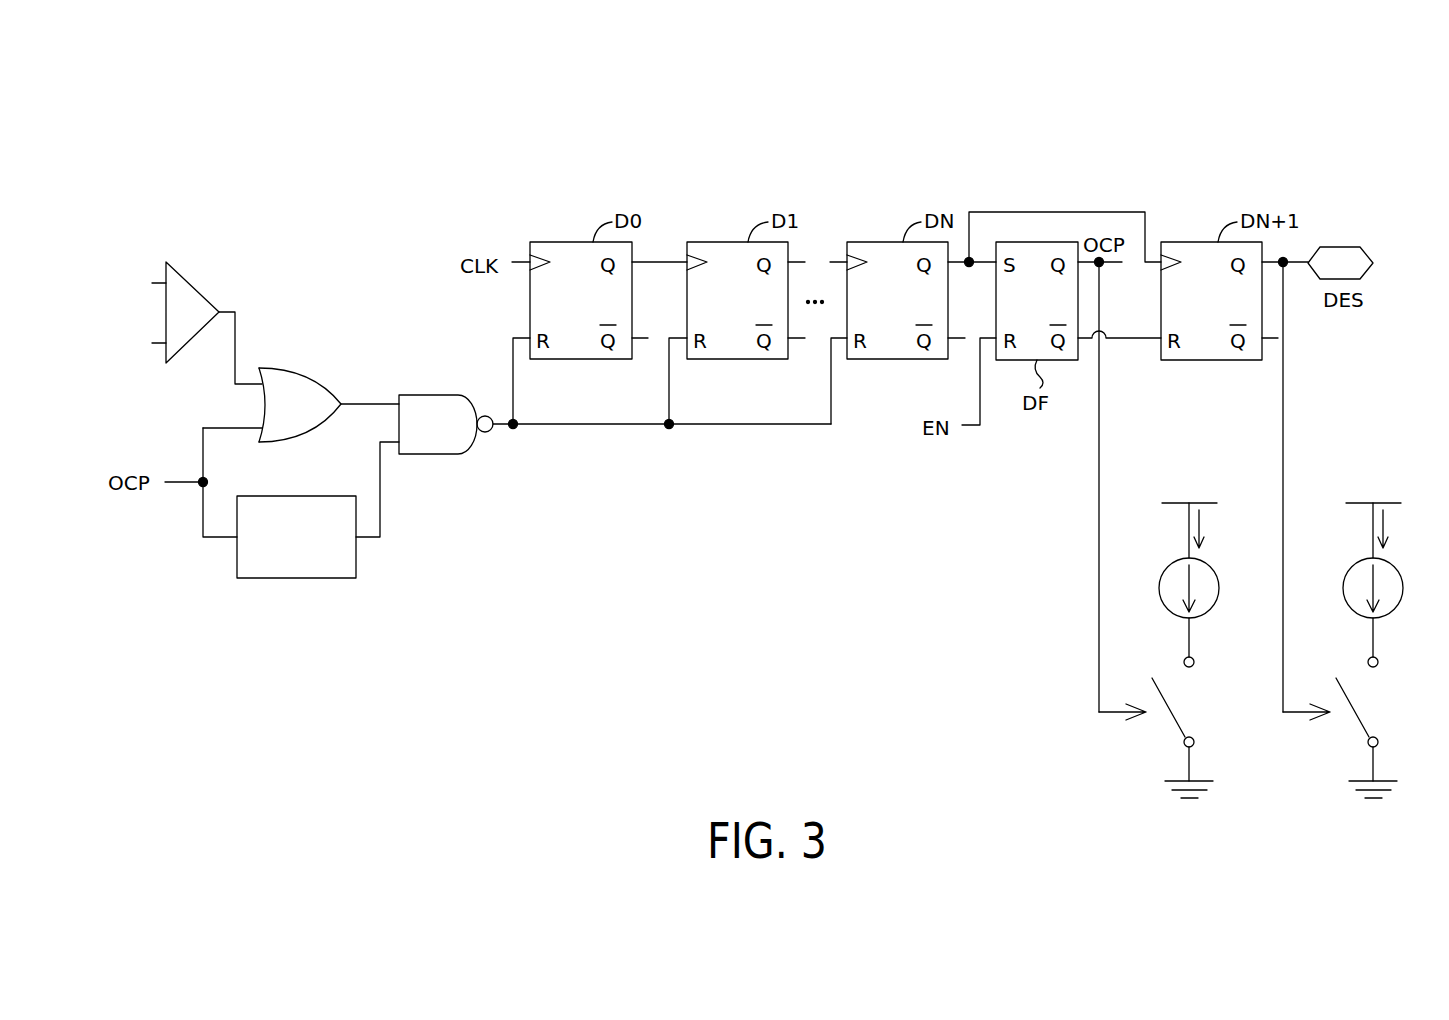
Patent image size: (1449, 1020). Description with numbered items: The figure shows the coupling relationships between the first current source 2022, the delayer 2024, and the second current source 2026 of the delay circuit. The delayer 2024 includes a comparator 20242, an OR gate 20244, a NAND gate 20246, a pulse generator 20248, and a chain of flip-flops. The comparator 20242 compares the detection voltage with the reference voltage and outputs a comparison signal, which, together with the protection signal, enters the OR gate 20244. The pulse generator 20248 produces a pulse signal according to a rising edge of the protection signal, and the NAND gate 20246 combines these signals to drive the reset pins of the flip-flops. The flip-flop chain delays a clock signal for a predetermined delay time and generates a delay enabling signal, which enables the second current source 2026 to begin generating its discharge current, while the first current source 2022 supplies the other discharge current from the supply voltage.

The delayer 2024 is at (1248, 123).
The comparator 20242 is at (188, 282).
The OR gate 20244 is at (280, 443).
The NAND gate 20246 is at (432, 395).
The pulse generator 20248 is at (297, 578).
The first current source 2022 is at (1219, 600).
The second current source 2026 is at (1403, 600).